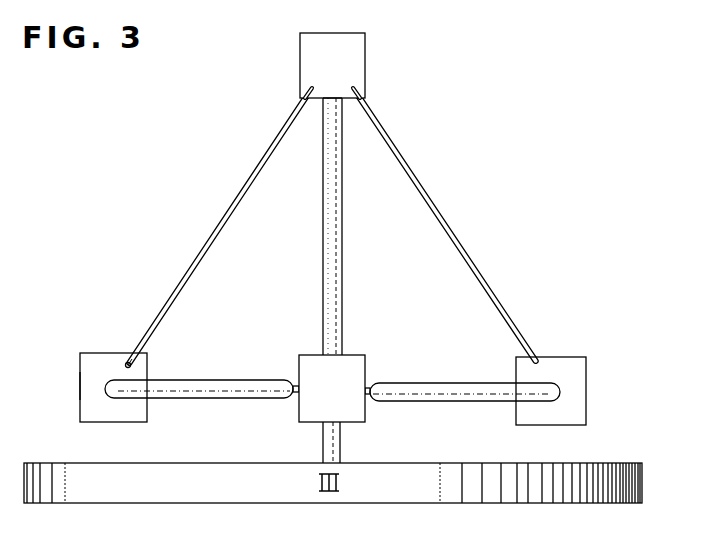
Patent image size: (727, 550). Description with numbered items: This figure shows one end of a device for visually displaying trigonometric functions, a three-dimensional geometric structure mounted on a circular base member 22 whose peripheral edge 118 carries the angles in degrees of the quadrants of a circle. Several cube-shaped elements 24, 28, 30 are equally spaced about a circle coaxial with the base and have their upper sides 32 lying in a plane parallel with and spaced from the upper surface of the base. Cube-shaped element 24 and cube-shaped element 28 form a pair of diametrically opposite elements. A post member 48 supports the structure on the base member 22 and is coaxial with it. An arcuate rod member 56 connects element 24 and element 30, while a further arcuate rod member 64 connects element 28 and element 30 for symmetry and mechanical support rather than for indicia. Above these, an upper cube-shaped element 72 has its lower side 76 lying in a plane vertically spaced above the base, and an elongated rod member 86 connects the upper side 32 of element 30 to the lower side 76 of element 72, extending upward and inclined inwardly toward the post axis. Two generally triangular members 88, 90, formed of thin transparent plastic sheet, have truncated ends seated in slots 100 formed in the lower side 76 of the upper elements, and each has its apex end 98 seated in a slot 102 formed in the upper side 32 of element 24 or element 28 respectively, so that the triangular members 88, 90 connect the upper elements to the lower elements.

The circular base member 22 is at (688, 482).
The cube-shaped element 24 is at (78, 382).
The cube-shaped element 28 is at (553, 357).
The cube-shaped element 30 is at (313, 355).
The upper side 32 is at (98, 353).
The post member 48 is at (340, 451).
The arcuate rod member 56 is at (204, 380).
The arcuate rod member 64 is at (434, 386).
The cube-shaped element 72 is at (300, 70).
The lower side 76 is at (318, 99).
The elongated rod member 86 is at (343, 184).
The triangular member 88 is at (250, 180).
The triangular member 90 is at (427, 192).
The apex end 98 is at (137, 349).
The slot 100 is at (306, 91).
The slot 102 is at (134, 363).
The peripheral edge 118 is at (645, 502).